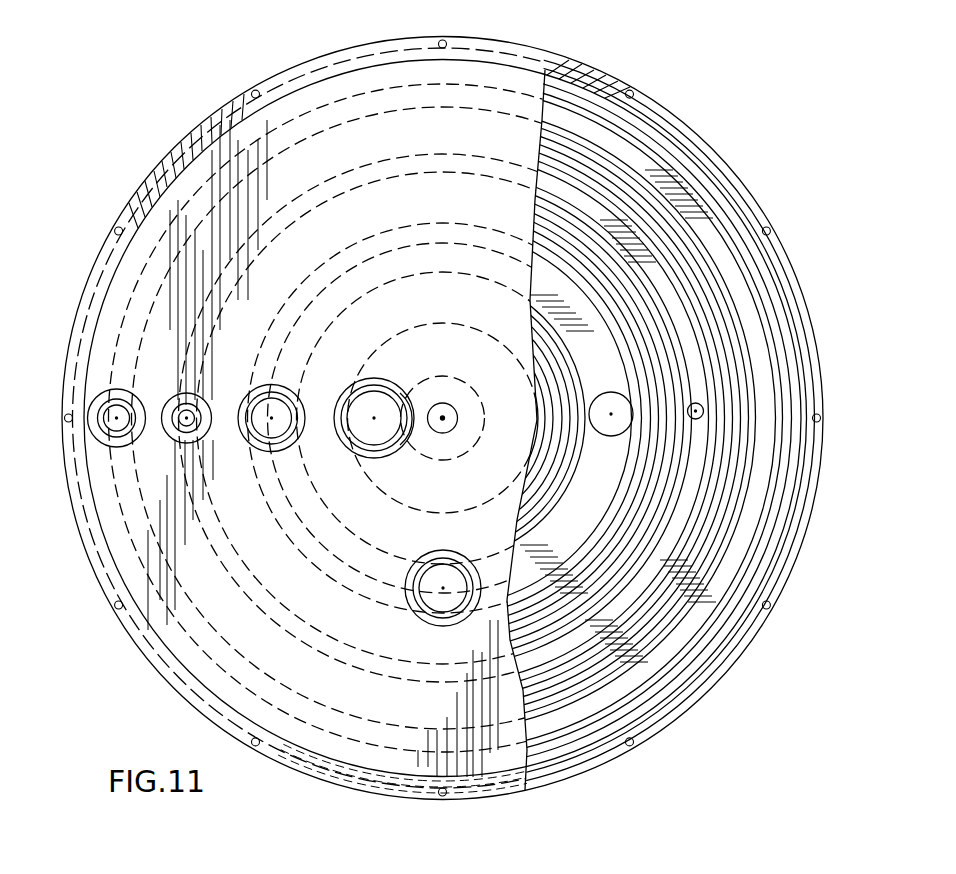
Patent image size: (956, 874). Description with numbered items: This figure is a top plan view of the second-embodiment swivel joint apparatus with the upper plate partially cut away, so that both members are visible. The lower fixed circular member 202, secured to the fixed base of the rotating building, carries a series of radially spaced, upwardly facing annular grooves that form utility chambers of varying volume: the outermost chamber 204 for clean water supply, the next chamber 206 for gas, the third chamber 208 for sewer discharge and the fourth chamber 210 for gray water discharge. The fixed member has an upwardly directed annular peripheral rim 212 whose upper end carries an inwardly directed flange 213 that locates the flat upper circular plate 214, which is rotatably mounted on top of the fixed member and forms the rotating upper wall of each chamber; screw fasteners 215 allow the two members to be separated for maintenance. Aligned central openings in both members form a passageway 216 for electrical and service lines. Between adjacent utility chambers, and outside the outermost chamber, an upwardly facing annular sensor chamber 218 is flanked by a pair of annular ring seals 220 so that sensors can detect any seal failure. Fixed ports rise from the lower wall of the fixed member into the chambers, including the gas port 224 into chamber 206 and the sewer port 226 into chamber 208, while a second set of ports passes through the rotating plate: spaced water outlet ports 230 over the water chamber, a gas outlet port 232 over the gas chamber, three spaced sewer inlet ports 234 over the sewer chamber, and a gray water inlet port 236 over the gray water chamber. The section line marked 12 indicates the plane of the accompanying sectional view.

The section line 12- 12 is at (45, 428).
The lower fixed circular member 202 is at (716, 160).
The outermost annular chamber 204 is at (741, 280).
The gas chamber 206 is at (550, 188).
The sewer chamber 208 is at (545, 275).
The gray water chamber 210 is at (443, 322).
The annular peripheral rim 212 is at (365, 48).
The inwardly directed flange 213 is at (232, 126).
The upper circular plate 214 is at (456, 92).
The screw fasteners 215 is at (115, 226).
The central passageway 216 is at (447, 412).
The sensor chamber 218 is at (660, 128).
The annular ring seals 220 is at (590, 153).
The second port of first set 224 is at (690, 414).
The third port of first set 226 is at (608, 394).
The water outlet ports 230 is at (110, 420).
The gas outlet port 232 is at (184, 414).
The sewer inlet ports 234 is at (273, 403).
The gray water inlet port 236 is at (370, 404).